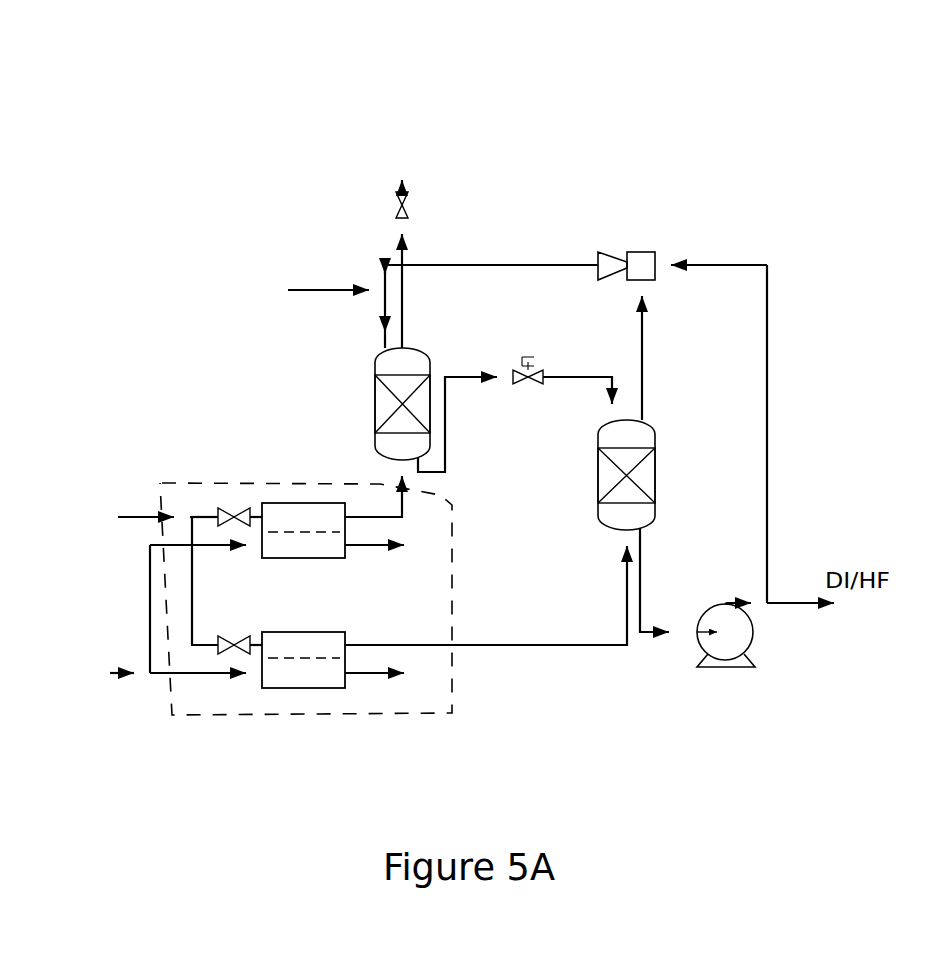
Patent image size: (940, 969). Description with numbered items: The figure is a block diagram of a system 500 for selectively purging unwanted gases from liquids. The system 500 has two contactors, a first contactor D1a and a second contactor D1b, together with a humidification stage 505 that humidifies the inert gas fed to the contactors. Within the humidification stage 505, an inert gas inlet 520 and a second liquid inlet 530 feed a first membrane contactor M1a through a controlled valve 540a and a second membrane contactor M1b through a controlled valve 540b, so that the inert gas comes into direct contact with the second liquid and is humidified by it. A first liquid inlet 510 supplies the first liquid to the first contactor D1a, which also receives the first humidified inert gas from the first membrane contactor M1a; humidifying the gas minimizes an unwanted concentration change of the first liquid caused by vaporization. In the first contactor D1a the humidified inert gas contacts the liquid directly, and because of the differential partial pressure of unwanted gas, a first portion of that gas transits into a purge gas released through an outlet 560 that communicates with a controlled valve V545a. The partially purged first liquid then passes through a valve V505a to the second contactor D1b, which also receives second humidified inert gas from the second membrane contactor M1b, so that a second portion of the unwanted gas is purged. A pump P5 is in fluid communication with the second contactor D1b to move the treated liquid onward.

The system 500 is at (677, 70).
The humidification stage 505 is at (237, 718).
The first liquid inlet 510 is at (297, 289).
The inert gas inlet 520 is at (117, 517).
The second liquid inlet 530 is at (154, 673).
The controlled valve 540a is at (236, 508).
The controlled valve 540b is at (238, 634).
The outlet 560 is at (411, 161).
The controlled valve V545a is at (409, 211).
The transfer valve V505a is at (527, 388).
The first contactor D1a is at (375, 397).
The second contactor D1b is at (655, 470).
The first membrane contactor M1a is at (302, 558).
The second membrane contactor M1b is at (302, 688).
The pump P5 is at (755, 632).